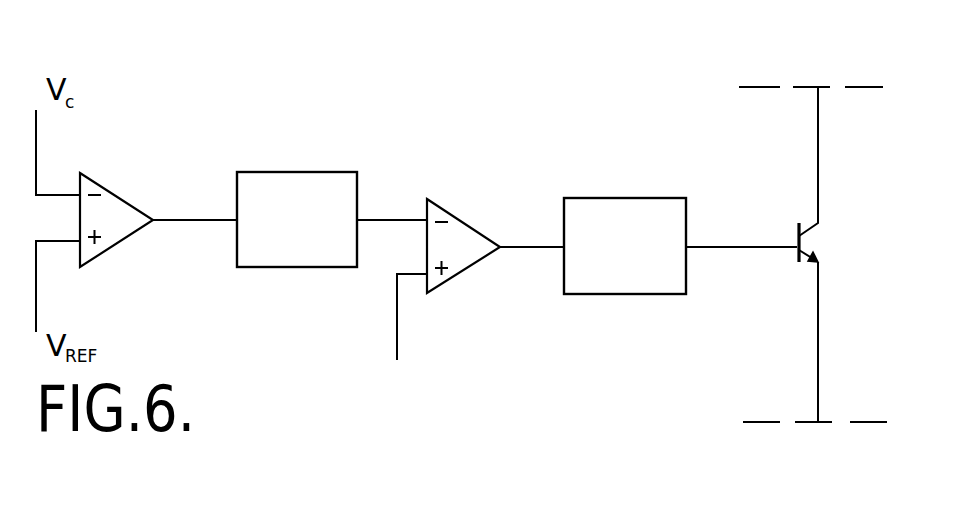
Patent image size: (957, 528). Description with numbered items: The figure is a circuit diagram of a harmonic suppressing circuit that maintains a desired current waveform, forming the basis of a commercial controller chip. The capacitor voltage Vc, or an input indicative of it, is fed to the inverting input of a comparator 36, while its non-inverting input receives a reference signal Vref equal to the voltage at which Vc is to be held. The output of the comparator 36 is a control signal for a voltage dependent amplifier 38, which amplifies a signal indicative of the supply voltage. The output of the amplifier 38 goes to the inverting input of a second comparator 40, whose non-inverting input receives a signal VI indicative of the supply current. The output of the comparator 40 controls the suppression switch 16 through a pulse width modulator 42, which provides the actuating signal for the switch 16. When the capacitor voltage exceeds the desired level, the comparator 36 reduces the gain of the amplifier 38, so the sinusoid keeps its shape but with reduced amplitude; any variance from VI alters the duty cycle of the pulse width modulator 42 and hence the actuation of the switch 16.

The suppression switch 16 is at (813, 241).
The comparator 36 is at (118, 212).
The voltage dependent amplifier 38 is at (347, 200).
The second comparator 40 is at (462, 233).
The pulse width modulator 42 is at (662, 206).